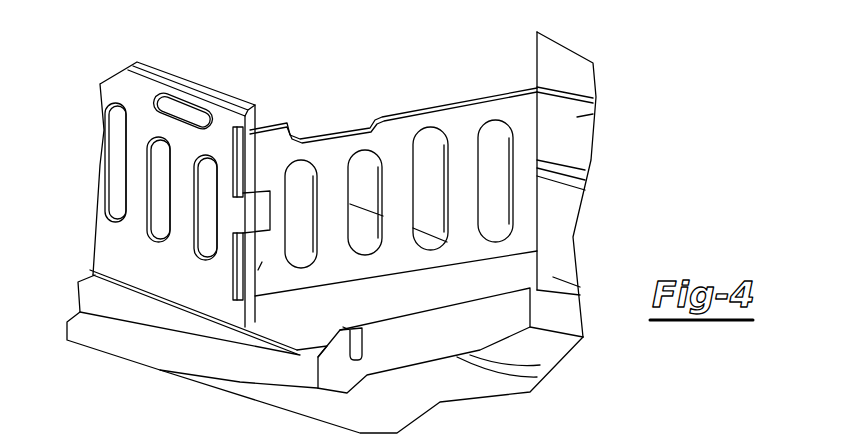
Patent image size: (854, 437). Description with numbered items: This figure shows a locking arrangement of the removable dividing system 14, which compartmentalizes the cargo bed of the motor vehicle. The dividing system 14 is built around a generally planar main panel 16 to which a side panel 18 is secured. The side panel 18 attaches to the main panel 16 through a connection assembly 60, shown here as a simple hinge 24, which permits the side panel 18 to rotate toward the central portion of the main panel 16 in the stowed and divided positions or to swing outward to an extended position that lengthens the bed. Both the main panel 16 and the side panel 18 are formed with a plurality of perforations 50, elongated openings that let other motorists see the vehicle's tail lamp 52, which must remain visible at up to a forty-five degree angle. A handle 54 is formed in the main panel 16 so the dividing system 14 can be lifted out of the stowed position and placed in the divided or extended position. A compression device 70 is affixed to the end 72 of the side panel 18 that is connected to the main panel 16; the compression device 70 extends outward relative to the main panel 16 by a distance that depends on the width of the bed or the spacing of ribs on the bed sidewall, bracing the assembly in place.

The dividing system 14 is at (343, 103).
The main panel 16 is at (187, 287).
The side panel 18 is at (479, 142).
The hinge 24 is at (250, 103).
The connection assembly 60 is at (191, 91).
The perforations 50 is at (160, 222).
The tail lamp 52 is at (574, 150).
The handle 54 is at (185, 108).
The compression device 70 is at (223, 247).
The end of side panel 72 is at (258, 270).